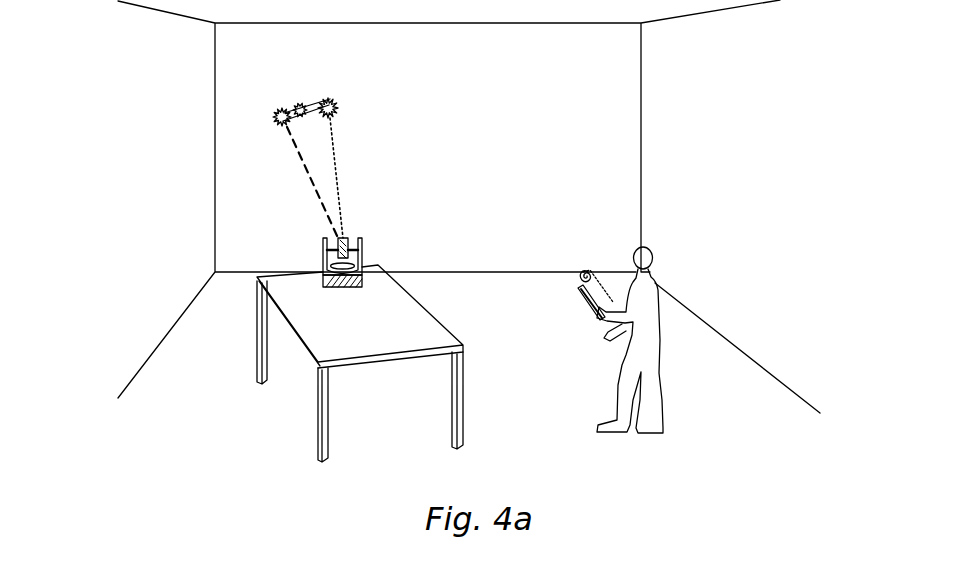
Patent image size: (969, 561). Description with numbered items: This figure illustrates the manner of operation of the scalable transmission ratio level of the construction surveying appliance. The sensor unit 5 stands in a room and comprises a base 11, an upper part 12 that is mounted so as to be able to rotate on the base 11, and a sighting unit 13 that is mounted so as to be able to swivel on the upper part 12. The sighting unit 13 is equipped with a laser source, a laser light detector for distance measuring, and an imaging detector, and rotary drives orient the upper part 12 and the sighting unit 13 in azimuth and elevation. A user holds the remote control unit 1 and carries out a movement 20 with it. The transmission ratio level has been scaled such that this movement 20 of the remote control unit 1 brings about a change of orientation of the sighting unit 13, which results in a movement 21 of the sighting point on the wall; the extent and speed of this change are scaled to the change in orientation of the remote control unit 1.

The remote control unit 1 is at (585, 303).
The sensor unit 5 is at (329, 279).
The base 11 is at (345, 283).
The upper part 12 is at (333, 285).
The sighting unit 13 is at (345, 240).
The movement of the remote control unit 20 is at (583, 268).
The movement of the sighting point 21 is at (305, 104).